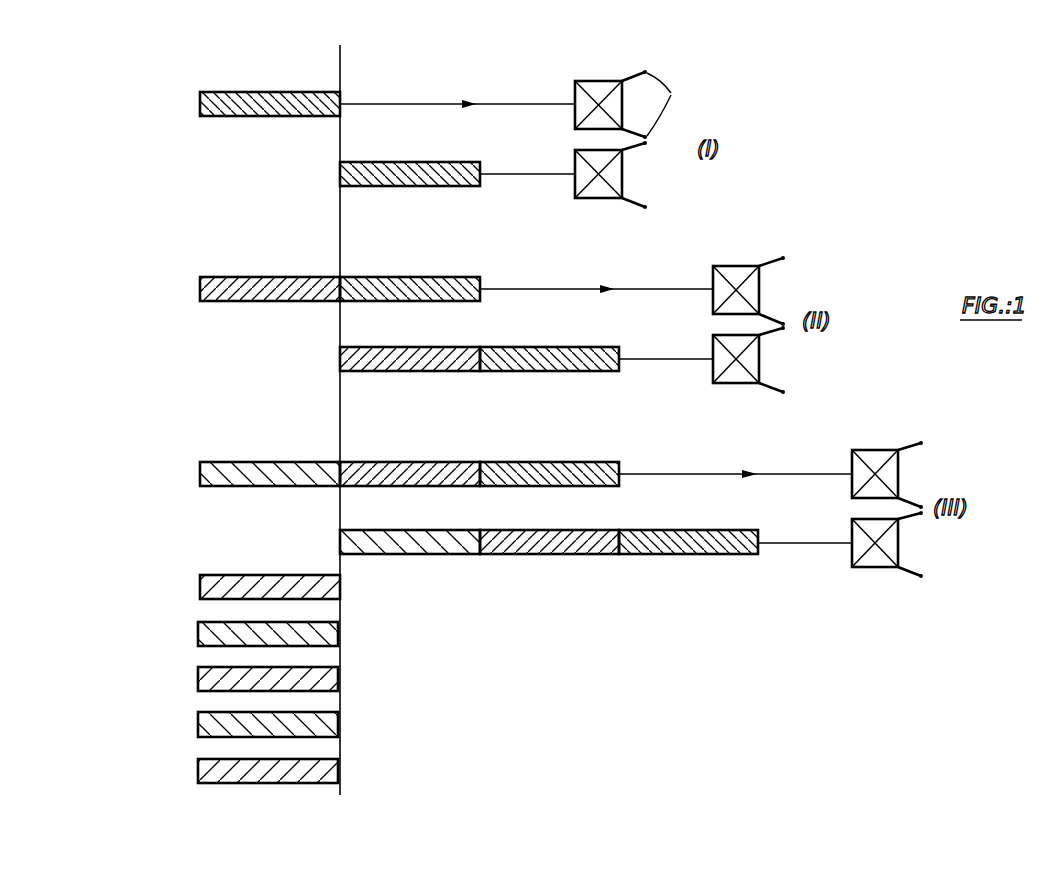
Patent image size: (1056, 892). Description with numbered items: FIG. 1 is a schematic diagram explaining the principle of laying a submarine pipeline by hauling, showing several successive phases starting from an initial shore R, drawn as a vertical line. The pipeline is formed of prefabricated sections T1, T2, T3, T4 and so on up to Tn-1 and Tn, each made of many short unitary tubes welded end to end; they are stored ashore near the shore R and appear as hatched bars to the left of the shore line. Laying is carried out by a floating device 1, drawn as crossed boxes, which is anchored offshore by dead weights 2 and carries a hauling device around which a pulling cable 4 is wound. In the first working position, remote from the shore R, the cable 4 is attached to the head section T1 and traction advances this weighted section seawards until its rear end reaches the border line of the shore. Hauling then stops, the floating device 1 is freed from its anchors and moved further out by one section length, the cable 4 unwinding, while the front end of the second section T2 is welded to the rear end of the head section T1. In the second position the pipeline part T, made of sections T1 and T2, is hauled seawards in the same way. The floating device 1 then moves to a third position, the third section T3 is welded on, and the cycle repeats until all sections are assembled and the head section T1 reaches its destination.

The floating device 1 is at (592, 90).
The dead weights 2 is at (667, 104).
The pulling cable 4 is at (520, 102).
The shore R is at (344, 231).
The pipeline part T is at (478, 416).
The head section T1 is at (252, 97).
The second section T2 is at (257, 282).
The third section T3 is at (250, 468).
The fourth section T4 is at (240, 583).
The (n-1)th section Tn-1 is at (330, 724).
The nth section Tn is at (330, 768).